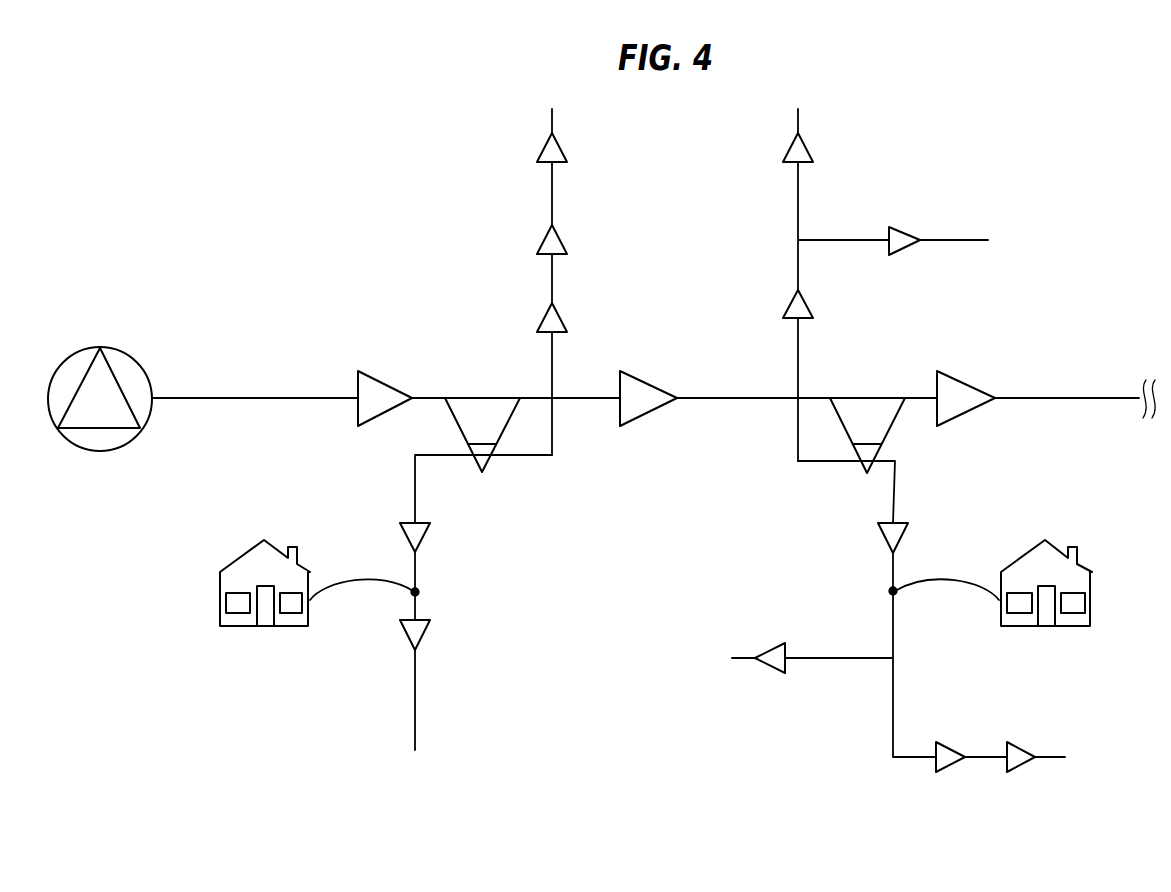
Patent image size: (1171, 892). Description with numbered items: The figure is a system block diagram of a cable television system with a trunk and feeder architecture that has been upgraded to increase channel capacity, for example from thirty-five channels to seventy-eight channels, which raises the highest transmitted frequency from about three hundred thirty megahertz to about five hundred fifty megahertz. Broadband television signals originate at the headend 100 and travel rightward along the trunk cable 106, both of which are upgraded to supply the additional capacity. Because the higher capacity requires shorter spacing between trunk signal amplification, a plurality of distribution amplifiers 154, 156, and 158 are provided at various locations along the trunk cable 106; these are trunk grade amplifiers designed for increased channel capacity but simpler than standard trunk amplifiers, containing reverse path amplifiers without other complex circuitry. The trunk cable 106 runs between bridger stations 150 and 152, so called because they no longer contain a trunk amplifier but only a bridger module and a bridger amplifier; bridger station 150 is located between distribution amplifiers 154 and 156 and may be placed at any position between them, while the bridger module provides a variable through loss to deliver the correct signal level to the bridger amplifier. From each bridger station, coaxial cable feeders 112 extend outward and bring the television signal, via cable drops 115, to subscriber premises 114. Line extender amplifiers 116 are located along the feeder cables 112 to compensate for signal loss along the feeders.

The headend 100 is at (149, 362).
The trunk cable 106 is at (230, 397).
The coaxial cable feeders 112 is at (553, 208).
The subscriber premises 114 is at (245, 555).
The cable drops 115 is at (358, 580).
The line extender amplifiers 116 is at (566, 150).
The bridger station 150 is at (490, 397).
The bridger station 152 is at (876, 397).
The distribution amplifier 154 is at (380, 376).
The distribution amplifier 156 is at (640, 372).
The distribution amplifier 158 is at (957, 372).